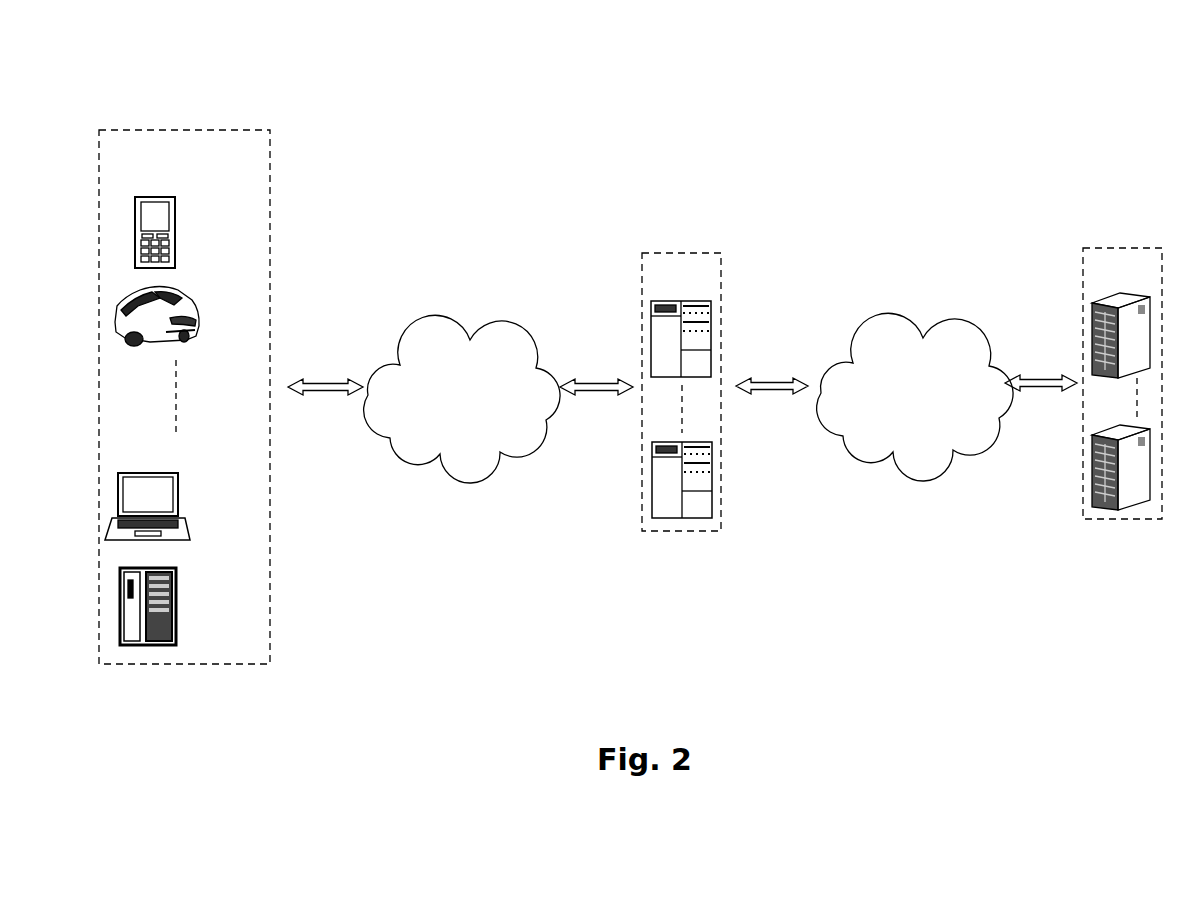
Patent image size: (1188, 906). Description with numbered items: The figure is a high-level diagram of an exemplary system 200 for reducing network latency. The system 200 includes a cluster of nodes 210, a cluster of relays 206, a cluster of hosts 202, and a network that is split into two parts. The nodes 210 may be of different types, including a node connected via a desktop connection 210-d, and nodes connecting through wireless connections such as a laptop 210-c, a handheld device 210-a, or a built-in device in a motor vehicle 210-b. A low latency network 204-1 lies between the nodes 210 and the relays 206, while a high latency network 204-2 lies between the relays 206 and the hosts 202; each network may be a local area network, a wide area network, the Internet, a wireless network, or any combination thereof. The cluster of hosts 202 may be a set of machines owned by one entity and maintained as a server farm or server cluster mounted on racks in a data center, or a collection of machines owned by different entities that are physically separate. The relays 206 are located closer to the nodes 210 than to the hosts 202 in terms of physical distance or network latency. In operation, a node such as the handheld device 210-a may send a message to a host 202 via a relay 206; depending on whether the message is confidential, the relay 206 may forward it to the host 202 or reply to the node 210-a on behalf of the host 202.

The system 200 is at (438, 60).
The cluster of nodes 210 is at (162, 128).
The handheld device node 210-a is at (175, 248).
The built-in motor vehicle device node 210-b is at (187, 301).
The laptop node 210-c is at (179, 493).
The desktop connection node 210-d is at (179, 606).
The low latency network 204-1 is at (548, 300).
The cluster of relays 206 is at (727, 315).
The high latency network 204-2 is at (967, 325).
The cluster of hosts 202 is at (1110, 250).